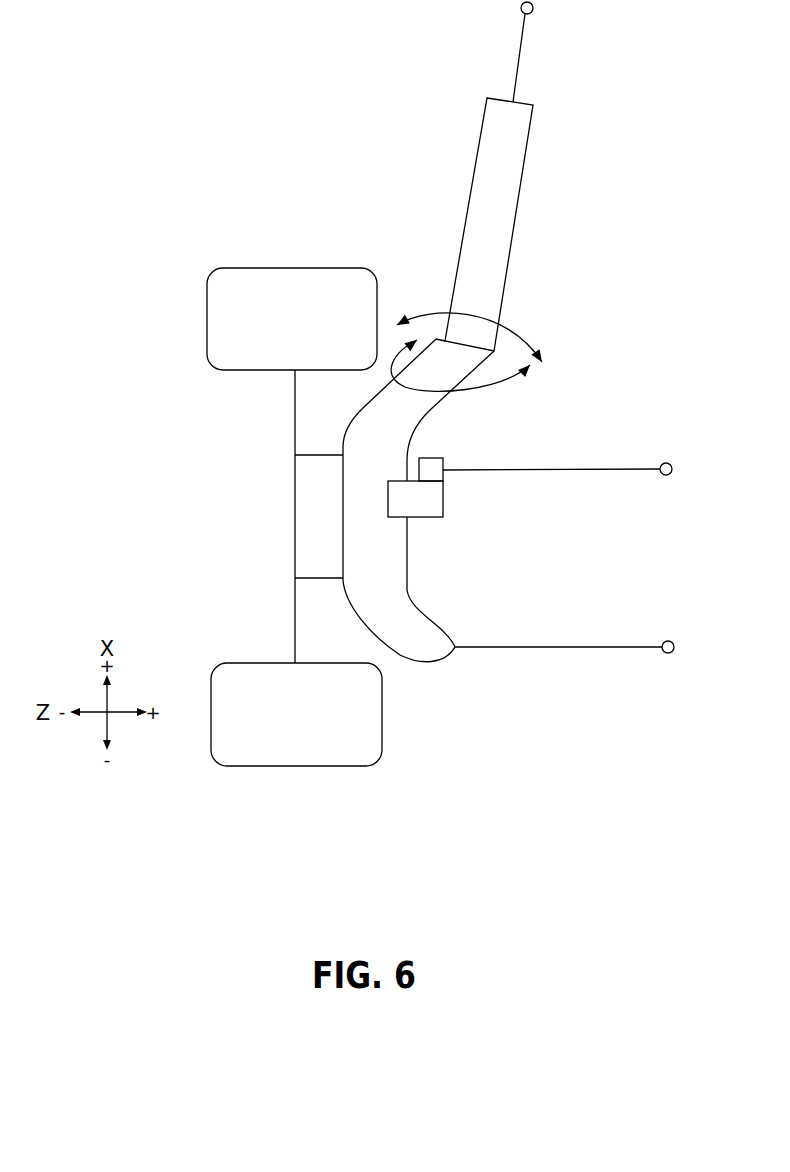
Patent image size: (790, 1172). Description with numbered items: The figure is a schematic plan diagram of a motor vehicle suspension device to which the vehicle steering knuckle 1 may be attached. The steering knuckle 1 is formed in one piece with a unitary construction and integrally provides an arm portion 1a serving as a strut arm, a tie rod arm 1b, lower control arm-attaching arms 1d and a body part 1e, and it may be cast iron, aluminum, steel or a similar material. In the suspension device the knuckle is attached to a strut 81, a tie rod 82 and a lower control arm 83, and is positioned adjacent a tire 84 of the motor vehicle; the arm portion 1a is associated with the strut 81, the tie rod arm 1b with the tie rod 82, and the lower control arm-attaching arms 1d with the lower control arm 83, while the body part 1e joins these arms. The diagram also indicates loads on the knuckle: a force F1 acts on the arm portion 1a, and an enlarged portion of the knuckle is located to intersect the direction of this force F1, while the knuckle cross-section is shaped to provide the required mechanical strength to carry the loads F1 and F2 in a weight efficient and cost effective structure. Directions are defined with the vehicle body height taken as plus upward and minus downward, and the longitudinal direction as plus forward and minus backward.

The steering knuckle 1 is at (435, 532).
The arm portion 1a is at (418, 413).
The tie rod arm 1b is at (437, 500).
The lower control arm-attaching arms 1d is at (432, 650).
The body part 1e is at (358, 508).
The strut 81 is at (503, 185).
The tie rod 82 is at (630, 471).
The lower control arm 83 is at (633, 648).
The tire 84 is at (241, 280).
The force F1 is at (518, 325).
The load F2 is at (500, 388).